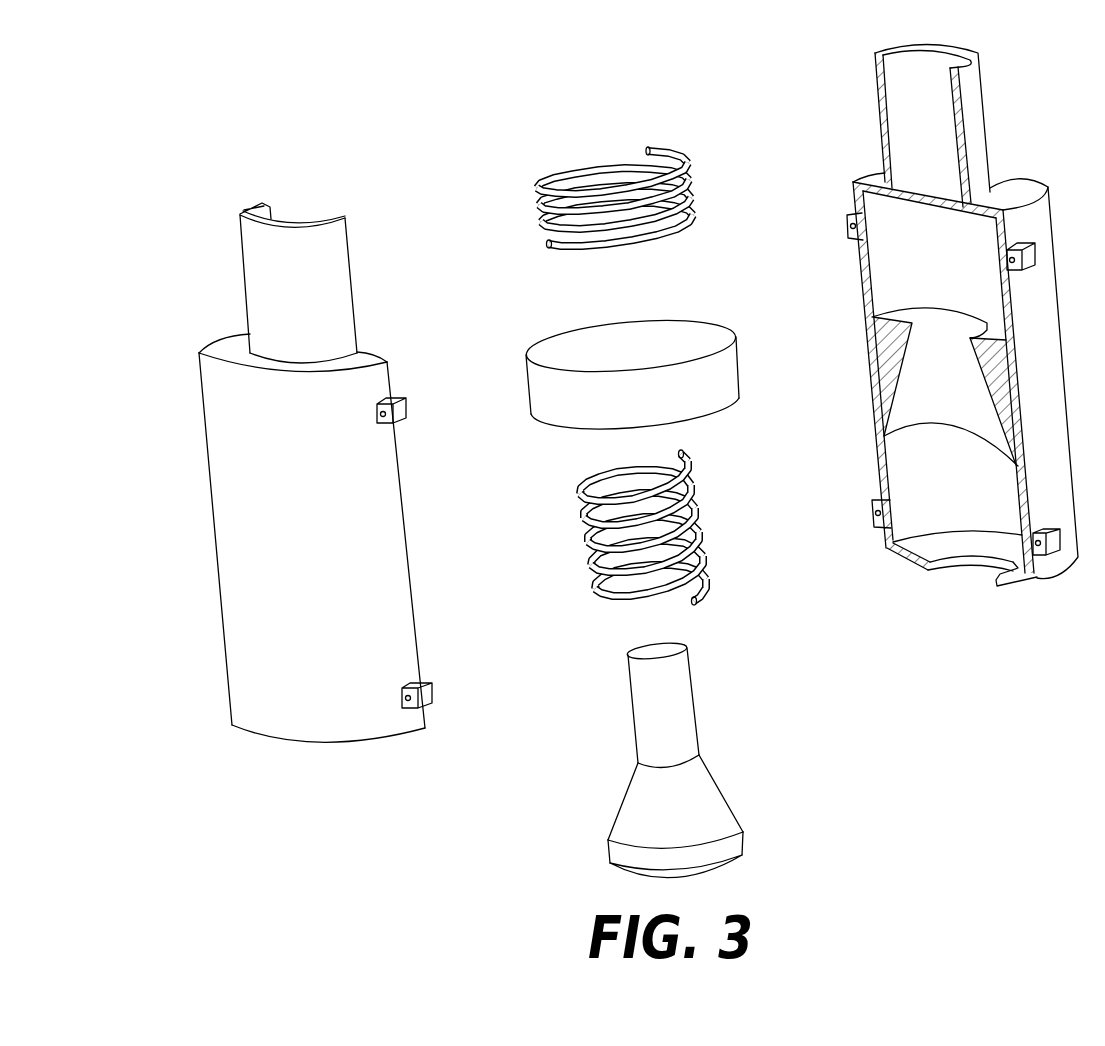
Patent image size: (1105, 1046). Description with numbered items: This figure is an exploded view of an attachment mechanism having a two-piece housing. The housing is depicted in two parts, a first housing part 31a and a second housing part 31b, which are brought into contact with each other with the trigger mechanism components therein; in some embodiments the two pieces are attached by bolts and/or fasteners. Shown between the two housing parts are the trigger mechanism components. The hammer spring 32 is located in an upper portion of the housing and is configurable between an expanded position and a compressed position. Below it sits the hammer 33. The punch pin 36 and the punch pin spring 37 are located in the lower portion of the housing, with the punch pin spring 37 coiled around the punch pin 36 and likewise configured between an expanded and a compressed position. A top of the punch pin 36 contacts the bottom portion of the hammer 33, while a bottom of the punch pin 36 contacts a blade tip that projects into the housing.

The housing part 31a is at (878, 120).
The housing part 31b is at (202, 410).
The hammer spring 32 is at (532, 212).
The hammer 33 is at (527, 392).
The punch pin 36 is at (637, 757).
The punch pin spring 37 is at (590, 577).